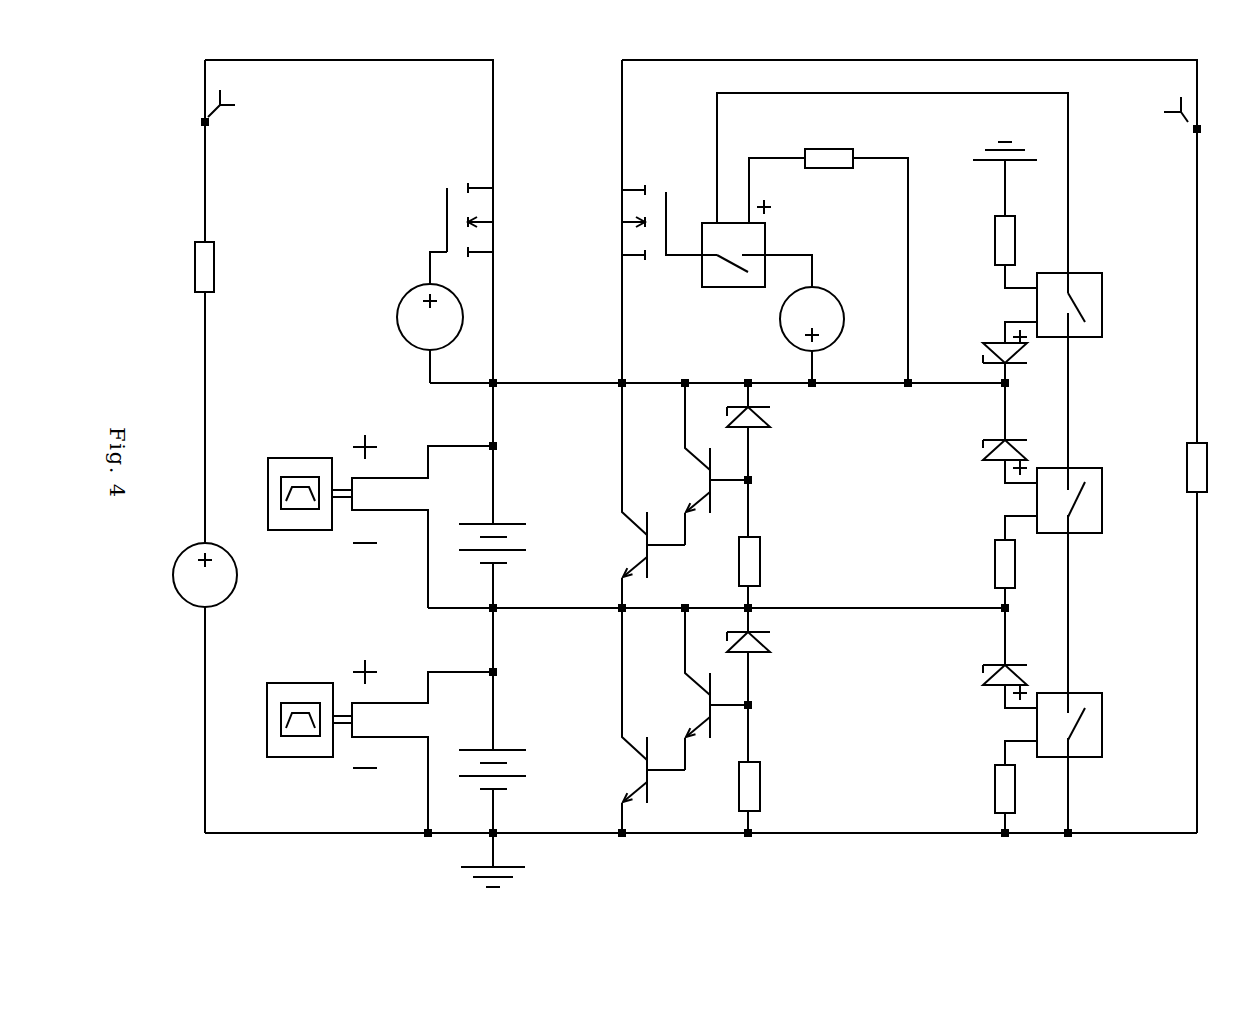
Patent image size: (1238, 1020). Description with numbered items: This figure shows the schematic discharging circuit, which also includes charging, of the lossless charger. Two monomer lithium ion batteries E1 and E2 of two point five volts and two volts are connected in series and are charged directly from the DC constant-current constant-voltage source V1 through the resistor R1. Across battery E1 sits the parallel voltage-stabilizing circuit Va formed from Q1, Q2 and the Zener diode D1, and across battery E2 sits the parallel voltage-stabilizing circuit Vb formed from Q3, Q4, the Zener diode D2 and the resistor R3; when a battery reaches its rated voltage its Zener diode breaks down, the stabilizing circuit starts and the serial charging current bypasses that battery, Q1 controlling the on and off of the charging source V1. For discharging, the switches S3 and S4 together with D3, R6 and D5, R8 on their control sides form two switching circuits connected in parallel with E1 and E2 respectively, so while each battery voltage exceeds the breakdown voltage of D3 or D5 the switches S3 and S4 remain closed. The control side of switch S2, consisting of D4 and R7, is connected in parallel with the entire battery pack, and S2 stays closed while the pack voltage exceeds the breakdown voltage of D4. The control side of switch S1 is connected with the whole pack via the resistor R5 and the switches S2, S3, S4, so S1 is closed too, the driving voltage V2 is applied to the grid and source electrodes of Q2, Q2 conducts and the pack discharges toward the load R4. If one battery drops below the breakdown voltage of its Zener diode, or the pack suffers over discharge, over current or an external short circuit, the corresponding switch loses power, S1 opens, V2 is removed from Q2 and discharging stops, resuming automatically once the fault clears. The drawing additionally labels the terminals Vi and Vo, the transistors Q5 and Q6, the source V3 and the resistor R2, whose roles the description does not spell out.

The input voltage terminal Vi is at (234, 103).
The output voltage terminal Vo is at (1157, 109).
The resistor R1 is at (220, 259).
The charging source V1 is at (212, 589).
The MOSFET transistor Q5 is at (486, 223).
The voltage source V3 is at (430, 333).
The MOSFET transistor Q6 is at (608, 222).
The switch S1 is at (736, 261).
The resistor R5 is at (829, 172).
The driving voltage V2 is at (808, 332).
The resistor R7 is at (992, 256).
The switch S2 is at (1071, 326).
The Zener diode D4 is at (1001, 341).
The Zener diode D3 is at (1001, 467).
The switch S3 is at (1071, 485).
The resistor R6 is at (992, 551).
The Zener diode D5 is at (1001, 692).
The switch S4 is at (1071, 710).
The resistor R8 is at (992, 776).
The load R4 is at (1178, 481).
The parallel voltage-stabilizing circuit Va is at (322, 485).
The parallel voltage-stabilizing circuit Vb is at (322, 713).
The monomer lithium ion battery E1 is at (511, 511).
The monomer lithium ion battery E2 is at (508, 737).
The triode Q1 is at (702, 464).
The triode Q2 is at (640, 495).
The Zener diode D1 is at (744, 433).
The resistor R2 is at (730, 561).
The triode Q3 is at (702, 689).
The triode Q4 is at (640, 720).
The Zener diode D2 is at (744, 658).
The resistor R3 is at (730, 786).